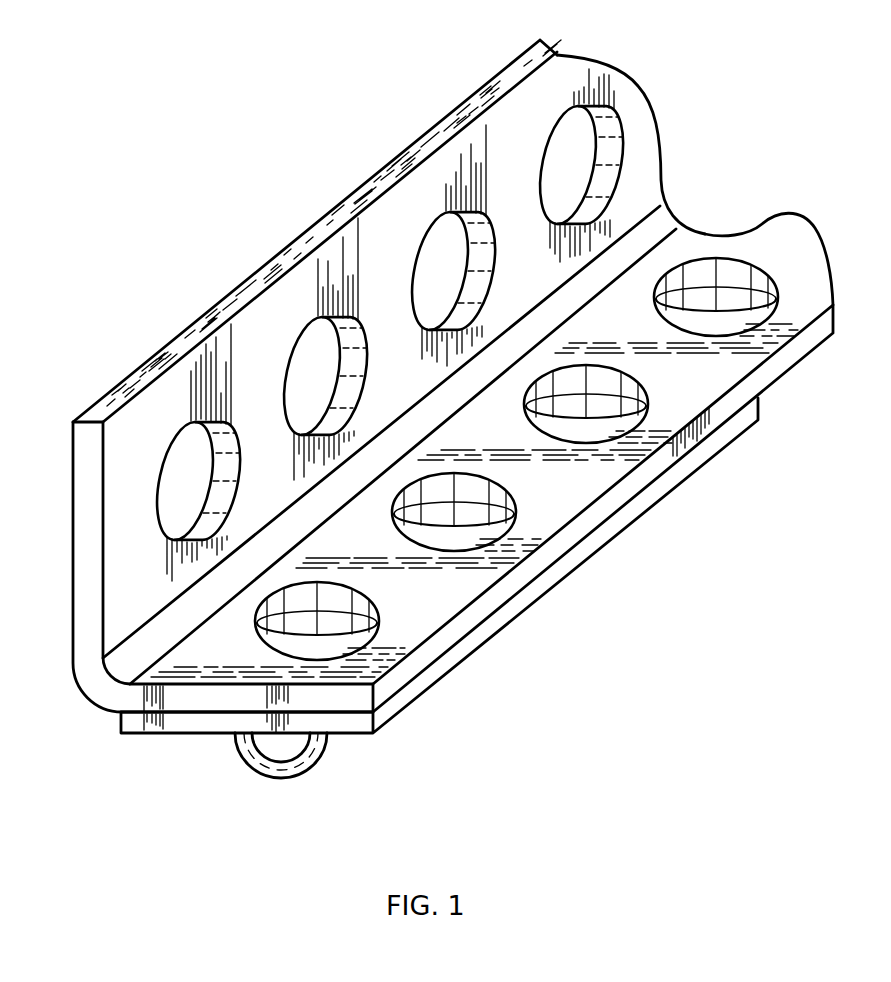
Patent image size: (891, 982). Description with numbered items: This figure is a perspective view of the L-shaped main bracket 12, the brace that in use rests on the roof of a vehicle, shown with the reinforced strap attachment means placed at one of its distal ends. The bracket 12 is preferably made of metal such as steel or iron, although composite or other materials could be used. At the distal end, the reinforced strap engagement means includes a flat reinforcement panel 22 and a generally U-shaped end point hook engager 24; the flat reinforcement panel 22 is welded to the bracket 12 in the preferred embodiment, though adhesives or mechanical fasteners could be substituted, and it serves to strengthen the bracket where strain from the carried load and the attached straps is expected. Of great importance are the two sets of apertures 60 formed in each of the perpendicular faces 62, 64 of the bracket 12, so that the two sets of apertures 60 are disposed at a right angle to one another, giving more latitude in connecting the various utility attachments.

The L-shaped main bracket 12 is at (478, 376).
The flat reinforcement panel 22 is at (652, 490).
The U-shaped end point hook engager 24 is at (303, 762).
The apertures 60 is at (182, 470).
The perpendicular face 62 is at (637, 118).
The perpendicular face 64 is at (805, 290).